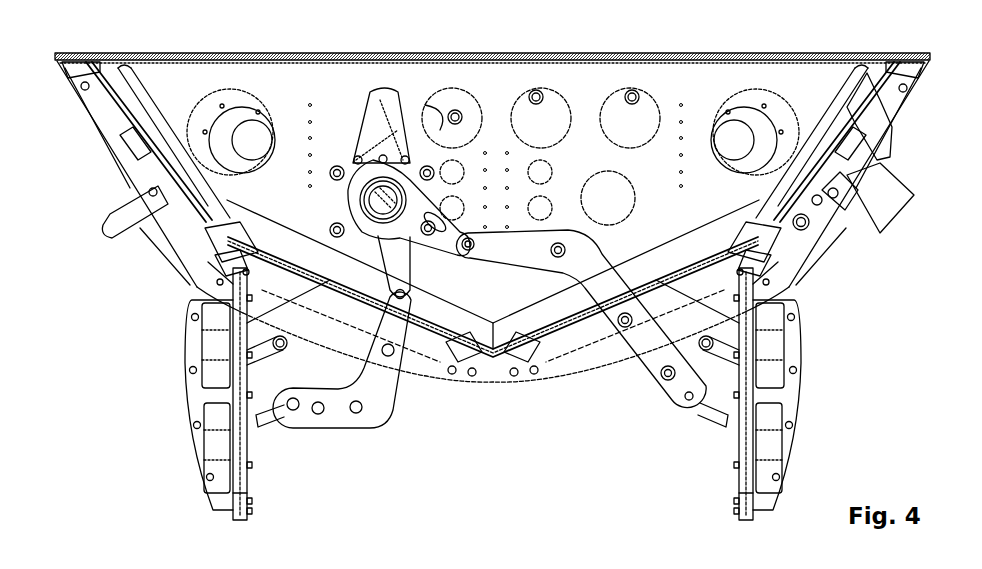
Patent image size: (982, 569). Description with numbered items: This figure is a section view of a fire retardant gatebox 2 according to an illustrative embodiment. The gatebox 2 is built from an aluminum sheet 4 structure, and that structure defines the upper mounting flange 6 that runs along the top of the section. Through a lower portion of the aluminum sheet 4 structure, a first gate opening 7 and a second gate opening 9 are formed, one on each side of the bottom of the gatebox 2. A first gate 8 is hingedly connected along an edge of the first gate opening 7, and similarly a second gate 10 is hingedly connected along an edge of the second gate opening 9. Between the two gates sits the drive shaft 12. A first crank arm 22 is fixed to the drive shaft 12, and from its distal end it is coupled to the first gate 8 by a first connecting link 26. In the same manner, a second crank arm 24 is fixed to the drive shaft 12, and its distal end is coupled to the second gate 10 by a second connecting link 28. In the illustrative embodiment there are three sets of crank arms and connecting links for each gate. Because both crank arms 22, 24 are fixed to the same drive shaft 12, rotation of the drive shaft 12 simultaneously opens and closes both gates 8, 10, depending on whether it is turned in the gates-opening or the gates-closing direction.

The fire retardant gatebox 2 is at (93, 422).
The aluminum sheet 4 is at (127, 110).
The upper mounting flange 6 is at (560, 55).
The first gate opening 7 is at (260, 247).
The first gate 8 is at (250, 477).
The second gate opening 9 is at (724, 248).
The second gate 10 is at (739, 477).
The drive shaft 12 is at (353, 185).
The first crank arm 22 is at (410, 267).
The second crank arm 24 is at (430, 205).
The first connecting link 26 is at (330, 423).
The second connecting link 28 is at (662, 392).